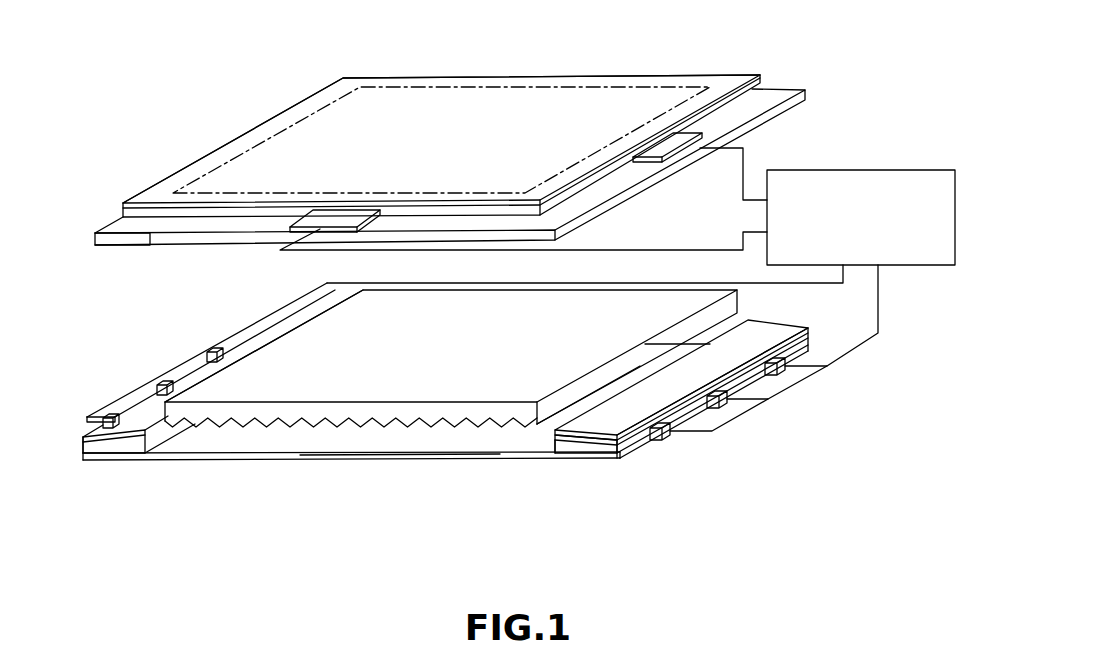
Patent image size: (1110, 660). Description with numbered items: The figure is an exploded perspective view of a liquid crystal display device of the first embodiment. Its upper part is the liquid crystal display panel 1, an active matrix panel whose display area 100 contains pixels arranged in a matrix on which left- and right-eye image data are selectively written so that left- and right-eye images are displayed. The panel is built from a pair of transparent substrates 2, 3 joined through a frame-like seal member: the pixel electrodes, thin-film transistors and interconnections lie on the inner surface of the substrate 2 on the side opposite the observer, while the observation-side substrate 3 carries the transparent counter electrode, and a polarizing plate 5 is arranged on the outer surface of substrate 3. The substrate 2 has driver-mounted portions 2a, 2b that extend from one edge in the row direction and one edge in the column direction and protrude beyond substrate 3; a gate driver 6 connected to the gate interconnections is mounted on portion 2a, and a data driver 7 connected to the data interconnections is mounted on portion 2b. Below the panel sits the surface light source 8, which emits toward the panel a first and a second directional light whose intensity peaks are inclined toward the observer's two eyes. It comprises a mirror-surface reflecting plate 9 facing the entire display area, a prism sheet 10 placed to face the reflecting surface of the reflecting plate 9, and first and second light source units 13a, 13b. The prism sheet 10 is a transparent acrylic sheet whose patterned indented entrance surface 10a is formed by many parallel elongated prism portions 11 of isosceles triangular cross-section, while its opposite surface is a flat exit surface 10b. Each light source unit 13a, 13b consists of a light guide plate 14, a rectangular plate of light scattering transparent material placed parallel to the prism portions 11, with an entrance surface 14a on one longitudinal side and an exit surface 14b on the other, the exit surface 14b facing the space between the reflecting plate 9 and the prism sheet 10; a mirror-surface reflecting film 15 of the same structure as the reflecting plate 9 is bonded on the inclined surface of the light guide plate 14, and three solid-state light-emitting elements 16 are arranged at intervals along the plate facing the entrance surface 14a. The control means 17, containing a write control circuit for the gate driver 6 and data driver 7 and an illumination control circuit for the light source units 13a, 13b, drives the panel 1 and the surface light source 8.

The liquid crystal display panel 1 is at (552, 68).
The transparent substrate 2 is at (127, 247).
The driver-mounted portion 2a is at (770, 100).
The driver-mounted portion 2b is at (213, 228).
The transparent substrate 3 is at (153, 213).
The polarizing plate 5 is at (208, 163).
The gate driver 6 is at (672, 148).
The data driver 7 is at (335, 215).
The surface light source 8 is at (411, 475).
The reflecting plate 9 is at (447, 458).
The prism sheet 10 is at (588, 308).
The entrance surface 10a is at (325, 441).
The exit surface 10b is at (325, 330).
The elongated prism portions 11 is at (315, 416).
The first light source unit 13a is at (229, 335).
The second light source unit 13b is at (645, 469).
The light guide plate 14 is at (137, 448).
The entrance surface 14a is at (86, 460).
The exit surface 14b is at (162, 438).
The mirror-surface reflecting film 15 is at (762, 340).
The solid-state light-emitting elements 16 is at (160, 386).
The control means 17 is at (905, 172).
The display area 100 is at (303, 133).